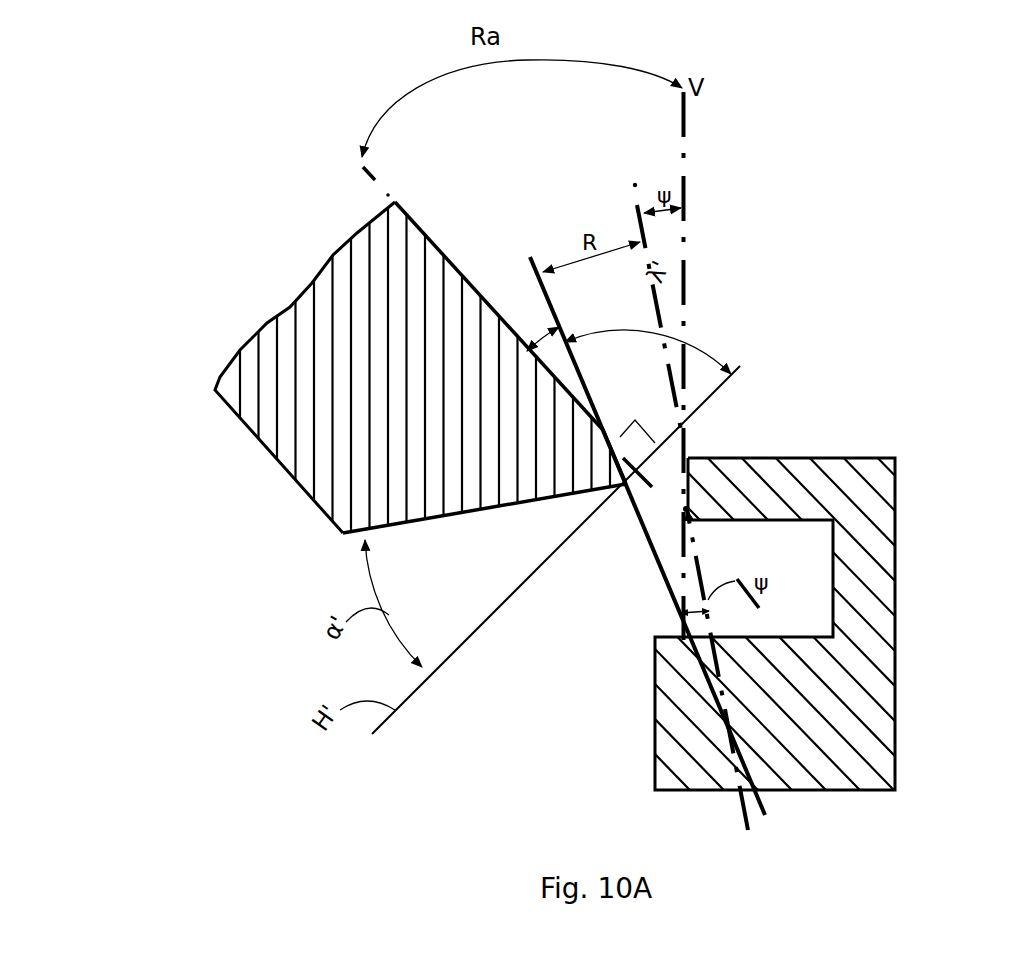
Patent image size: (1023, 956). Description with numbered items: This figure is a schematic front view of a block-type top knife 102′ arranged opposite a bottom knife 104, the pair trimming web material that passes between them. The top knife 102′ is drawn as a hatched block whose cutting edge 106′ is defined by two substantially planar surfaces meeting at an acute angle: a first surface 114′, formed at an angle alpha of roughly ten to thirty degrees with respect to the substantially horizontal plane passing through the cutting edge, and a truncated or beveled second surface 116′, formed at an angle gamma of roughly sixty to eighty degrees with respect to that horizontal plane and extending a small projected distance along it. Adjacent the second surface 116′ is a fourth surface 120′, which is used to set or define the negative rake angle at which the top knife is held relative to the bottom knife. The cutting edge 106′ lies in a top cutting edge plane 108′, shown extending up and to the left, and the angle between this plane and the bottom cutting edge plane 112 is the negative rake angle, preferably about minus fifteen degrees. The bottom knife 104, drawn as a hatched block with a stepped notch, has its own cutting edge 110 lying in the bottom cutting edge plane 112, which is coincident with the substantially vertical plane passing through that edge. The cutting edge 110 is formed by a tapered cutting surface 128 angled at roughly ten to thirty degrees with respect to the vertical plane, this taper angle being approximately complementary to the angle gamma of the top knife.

The top knife 102′ is at (172, 507).
The bottom knife 104 is at (895, 730).
The cutting edge 106′ is at (621, 489).
The top cutting edge plane 108′ is at (460, 293).
The cutting edge 110 is at (690, 457).
The bottom cutting edge plane 112 is at (643, 295).
The first surface 114′ is at (448, 513).
The second surface 116′ is at (633, 427).
The fourth surface 120′ is at (500, 315).
The cutting surface 128 is at (652, 530).